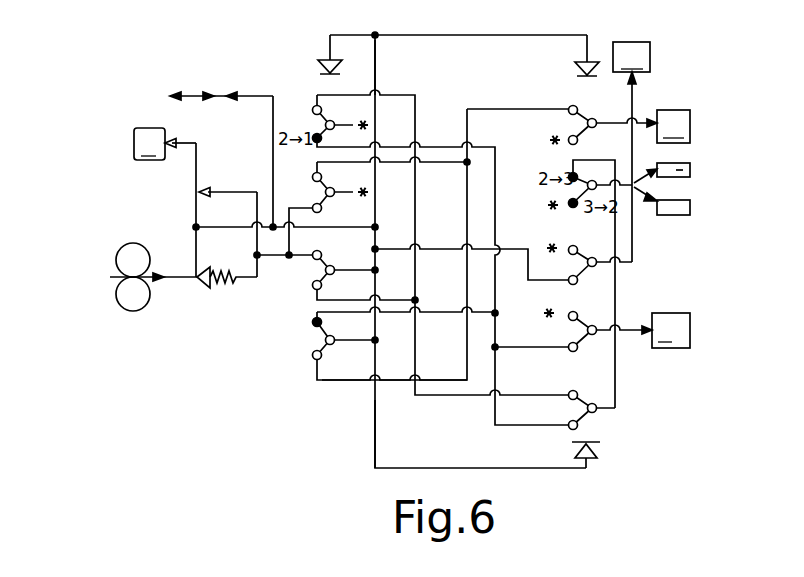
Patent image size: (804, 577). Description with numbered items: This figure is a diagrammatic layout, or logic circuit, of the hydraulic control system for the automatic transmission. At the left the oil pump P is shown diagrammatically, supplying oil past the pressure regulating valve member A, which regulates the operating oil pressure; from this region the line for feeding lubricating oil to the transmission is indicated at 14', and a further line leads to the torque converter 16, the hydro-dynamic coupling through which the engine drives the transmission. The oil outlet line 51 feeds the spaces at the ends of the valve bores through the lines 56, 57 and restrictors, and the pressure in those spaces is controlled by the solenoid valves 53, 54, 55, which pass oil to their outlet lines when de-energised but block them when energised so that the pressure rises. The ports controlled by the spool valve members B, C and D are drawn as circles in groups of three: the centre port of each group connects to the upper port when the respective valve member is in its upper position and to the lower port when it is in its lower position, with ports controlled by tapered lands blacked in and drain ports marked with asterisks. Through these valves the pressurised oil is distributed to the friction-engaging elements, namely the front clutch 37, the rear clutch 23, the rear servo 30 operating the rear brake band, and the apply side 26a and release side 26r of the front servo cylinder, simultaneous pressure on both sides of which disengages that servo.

The lubricating oil feed line 14' is at (221, 141).
The torque converter 16 is at (165, 144).
The oil pump P is at (136, 291).
The pressure regulating valve member A is at (221, 289).
The spool valve member B is at (298, 344).
The oil outlet line 51 is at (334, 232).
The solenoid valve 55 is at (322, 64).
The feed line 57 is at (383, 68).
The solenoid valve 54 is at (573, 70).
The solenoid valve 53 is at (614, 442).
The feed line 56 is at (378, 427).
The front clutch 37 is at (631, 152).
The spool valve member C is at (608, 137).
The rear servo 30 is at (673, 126).
The rear clutch 23 is at (690, 168).
The release side of front servo cylinder 26r is at (690, 208).
The apply side of front servo cylinder 26a is at (673, 330).
The spool valve member D is at (628, 365).